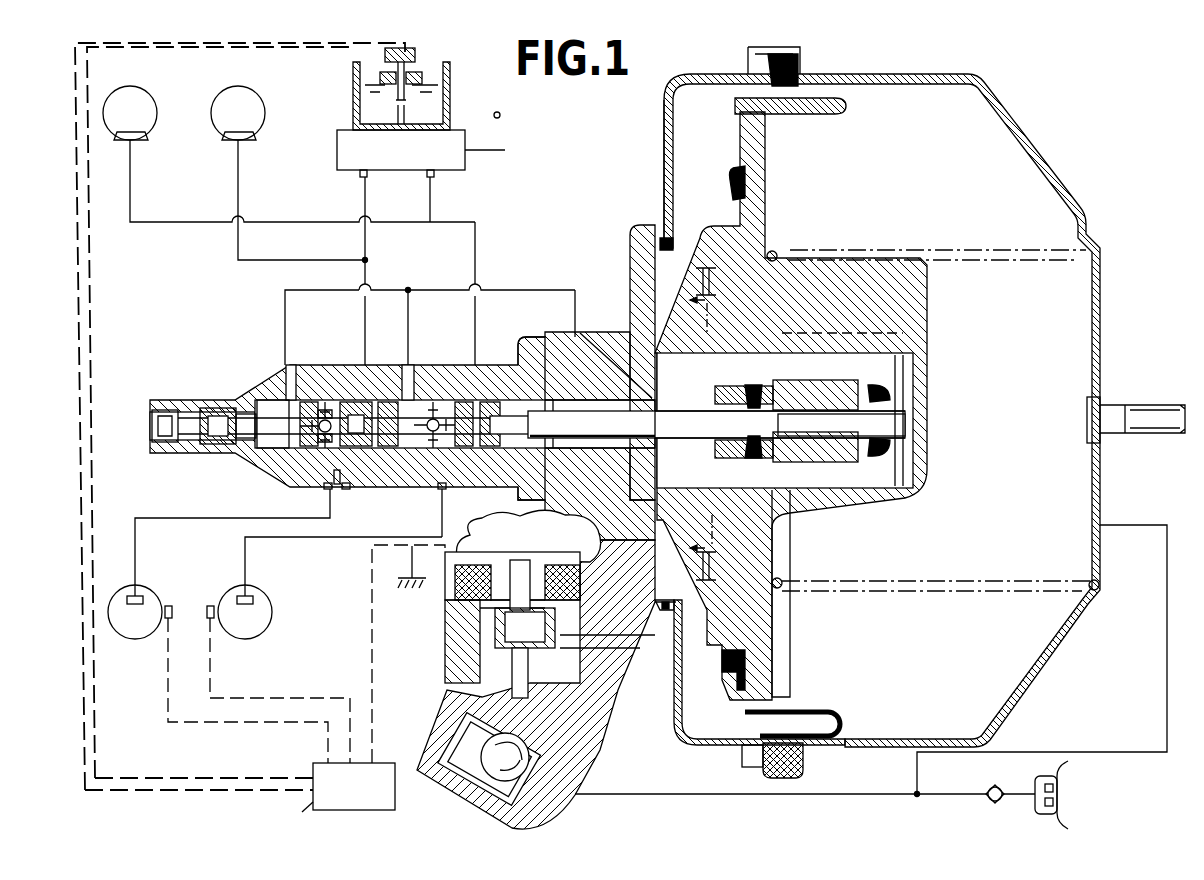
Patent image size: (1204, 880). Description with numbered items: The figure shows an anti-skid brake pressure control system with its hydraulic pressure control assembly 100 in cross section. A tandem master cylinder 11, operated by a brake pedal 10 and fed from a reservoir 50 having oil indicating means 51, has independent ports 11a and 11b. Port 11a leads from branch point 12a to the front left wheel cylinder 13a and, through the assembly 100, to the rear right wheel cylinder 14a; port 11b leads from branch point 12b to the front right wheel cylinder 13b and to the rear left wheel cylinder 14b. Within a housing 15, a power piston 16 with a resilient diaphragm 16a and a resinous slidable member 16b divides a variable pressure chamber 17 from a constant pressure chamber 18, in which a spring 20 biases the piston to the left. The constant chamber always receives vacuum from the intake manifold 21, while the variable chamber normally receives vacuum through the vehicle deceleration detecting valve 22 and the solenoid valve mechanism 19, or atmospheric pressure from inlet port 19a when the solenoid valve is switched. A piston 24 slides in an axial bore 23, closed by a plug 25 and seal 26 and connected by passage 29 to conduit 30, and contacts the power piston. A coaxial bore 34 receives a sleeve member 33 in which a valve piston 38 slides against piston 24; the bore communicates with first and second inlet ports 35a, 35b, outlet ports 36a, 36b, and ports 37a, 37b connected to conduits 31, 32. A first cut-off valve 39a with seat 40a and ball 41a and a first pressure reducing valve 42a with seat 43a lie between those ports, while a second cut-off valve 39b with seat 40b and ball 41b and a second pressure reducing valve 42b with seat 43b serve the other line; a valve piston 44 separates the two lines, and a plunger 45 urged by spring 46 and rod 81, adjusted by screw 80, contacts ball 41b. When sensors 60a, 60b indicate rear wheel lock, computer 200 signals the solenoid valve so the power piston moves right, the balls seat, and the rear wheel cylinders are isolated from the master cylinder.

The brake pedal 10 is at (557, 197).
The tandem master cylinder 11 is at (415, 166).
The port 11a is at (430, 177).
The port 11b is at (363, 177).
The branch point 12a is at (440, 222).
The branch point 12b is at (366, 262).
The front left wheel cylinder 13a is at (147, 142).
The front right wheel cylinder 13b is at (237, 142).
The rear right wheel cylinder 14a is at (256, 597).
The rear left wheel cylinder 14b is at (135, 603).
The housing 15 is at (1025, 695).
The power piston 16 is at (797, 707).
The resilient diaphragm 16a is at (850, 724).
The resinous slidable member 16b is at (760, 650).
The variable pressure chamber 17 is at (720, 725).
The constant pressure chamber 18 is at (935, 655).
The solenoid valve mechanism 19 is at (447, 640).
The atmospheric inlet port 19a is at (447, 590).
The spring 20 is at (976, 583).
The intake manifold 21 is at (1070, 788).
The vehicle deceleration detecting valve 22 is at (462, 793).
The axial bore 23 is at (690, 440).
The piston 24 is at (623, 432).
The plug 25 is at (856, 400).
The seal 26 is at (775, 395).
The passage 29 is at (637, 348).
The conduit 30 is at (530, 290).
The conduit 31 is at (410, 300).
The conduit 32 is at (285, 293).
The sleeve member 33 is at (529, 536).
The axial bore 34 is at (552, 332).
The first inlet port 35a is at (505, 365).
The second inlet port 35b is at (345, 365).
The first outlet port 36a is at (418, 510).
The second outlet port 36b is at (337, 495).
The port 37a is at (400, 365).
The port 37b is at (288, 345).
The valve piston 38 is at (608, 409).
The first cut-off valve 39a is at (600, 411).
The second cut-off valve 39b is at (328, 492).
The seat 40a is at (450, 455).
The seat 40b is at (346, 492).
The ball 41a is at (455, 365).
The ball 41b is at (300, 455).
The first pressure reducing valve 42a is at (422, 400).
The second pressure reducing valve 42b is at (270, 455).
The seat 43a is at (340, 455).
The seat 43b is at (318, 400).
The valve piston 44 is at (388, 400).
The plunger 45 is at (265, 365).
The spring 46 is at (220, 452).
The reservoir 50 is at (428, 52).
The oil indicating means 51 is at (385, 56).
The sensor 60a is at (210, 605).
The sensor 60b is at (168, 605).
The screw 80 is at (160, 403).
The rod 81 is at (228, 402).
The hydraulic pressure control assembly 100 is at (583, 302).
The computer 200 is at (313, 766).